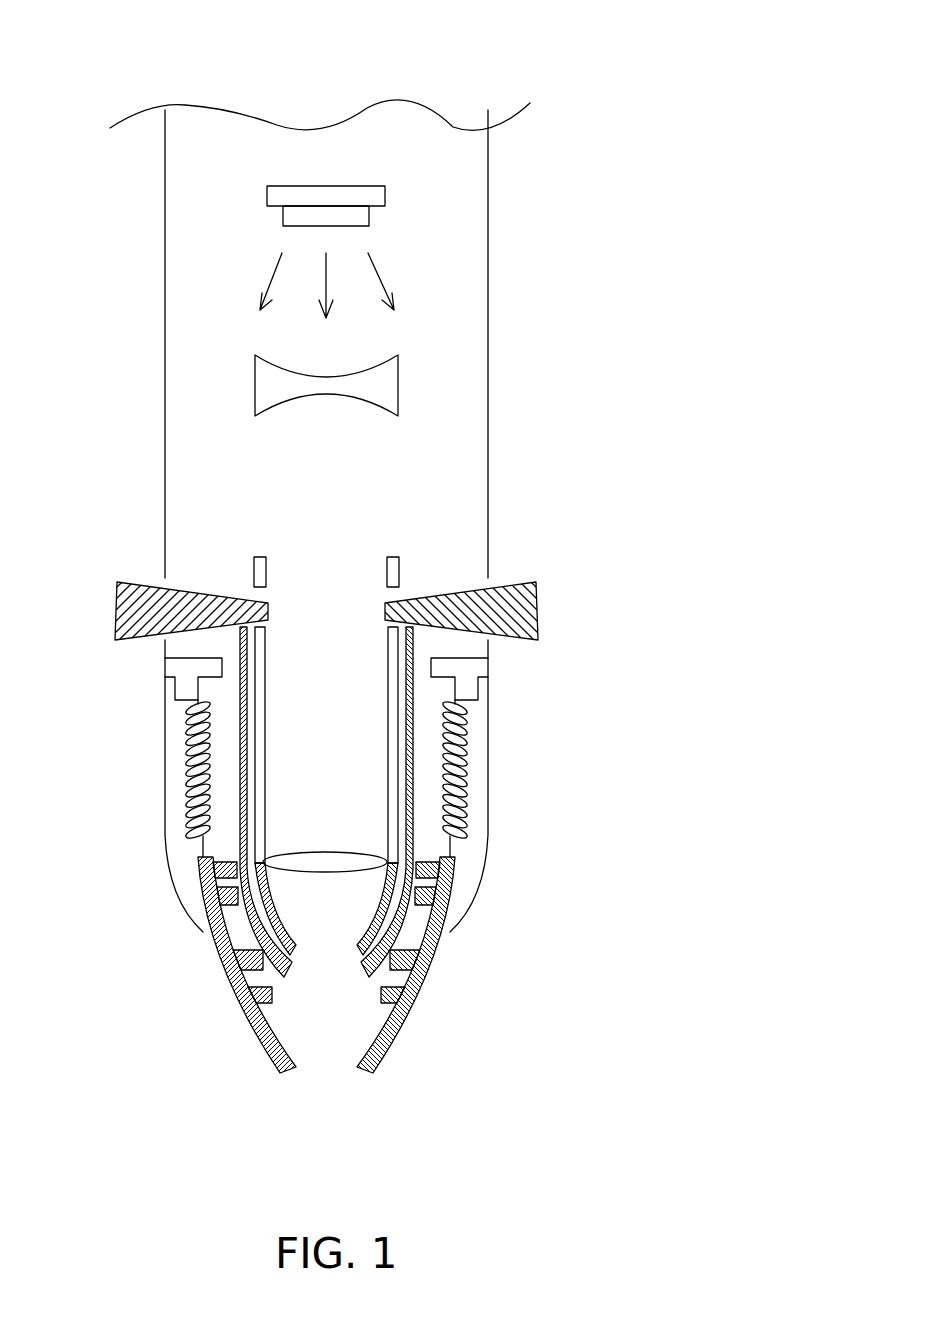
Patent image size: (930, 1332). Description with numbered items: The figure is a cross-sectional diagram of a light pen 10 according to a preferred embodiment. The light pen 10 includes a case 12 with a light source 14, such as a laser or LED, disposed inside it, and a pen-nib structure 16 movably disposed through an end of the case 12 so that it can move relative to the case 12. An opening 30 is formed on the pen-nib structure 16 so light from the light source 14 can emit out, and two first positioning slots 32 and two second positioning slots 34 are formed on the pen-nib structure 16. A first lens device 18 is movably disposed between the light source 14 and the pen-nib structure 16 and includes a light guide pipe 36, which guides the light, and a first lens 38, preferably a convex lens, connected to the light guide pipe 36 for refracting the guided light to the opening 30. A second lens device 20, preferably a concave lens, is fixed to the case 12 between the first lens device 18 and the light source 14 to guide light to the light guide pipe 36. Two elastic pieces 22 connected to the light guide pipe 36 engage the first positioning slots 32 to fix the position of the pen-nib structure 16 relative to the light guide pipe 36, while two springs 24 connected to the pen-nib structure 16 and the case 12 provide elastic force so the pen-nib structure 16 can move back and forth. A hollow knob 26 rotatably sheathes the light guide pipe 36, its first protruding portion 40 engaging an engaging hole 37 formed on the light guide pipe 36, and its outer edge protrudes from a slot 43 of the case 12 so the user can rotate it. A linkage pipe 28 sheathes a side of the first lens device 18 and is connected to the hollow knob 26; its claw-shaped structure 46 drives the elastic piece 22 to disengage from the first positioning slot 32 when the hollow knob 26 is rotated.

The light pen 10 is at (560, 78).
The case 12 is at (165, 168).
The light source 14 is at (362, 194).
The pen-nib structure 16 is at (267, 1030).
The first lens device 18 is at (567, 722).
The second lens device 20 is at (378, 380).
The elastic piece 22 is at (273, 943).
The spring 24 is at (187, 768).
The hollow knob 26 is at (551, 599).
The linkage pipe 28 is at (242, 705).
The opening 30 is at (343, 1083).
The first positioning slot 32 is at (245, 975).
The second positioning slot 34 is at (207, 882).
The light guide pipe 36 is at (390, 728).
The engaging hole 37 is at (246, 599).
The first lens 38 is at (342, 858).
The first protruding portion 40 is at (270, 604).
The slot 43 is at (150, 570).
The claw-shaped structure 46 is at (247, 921).